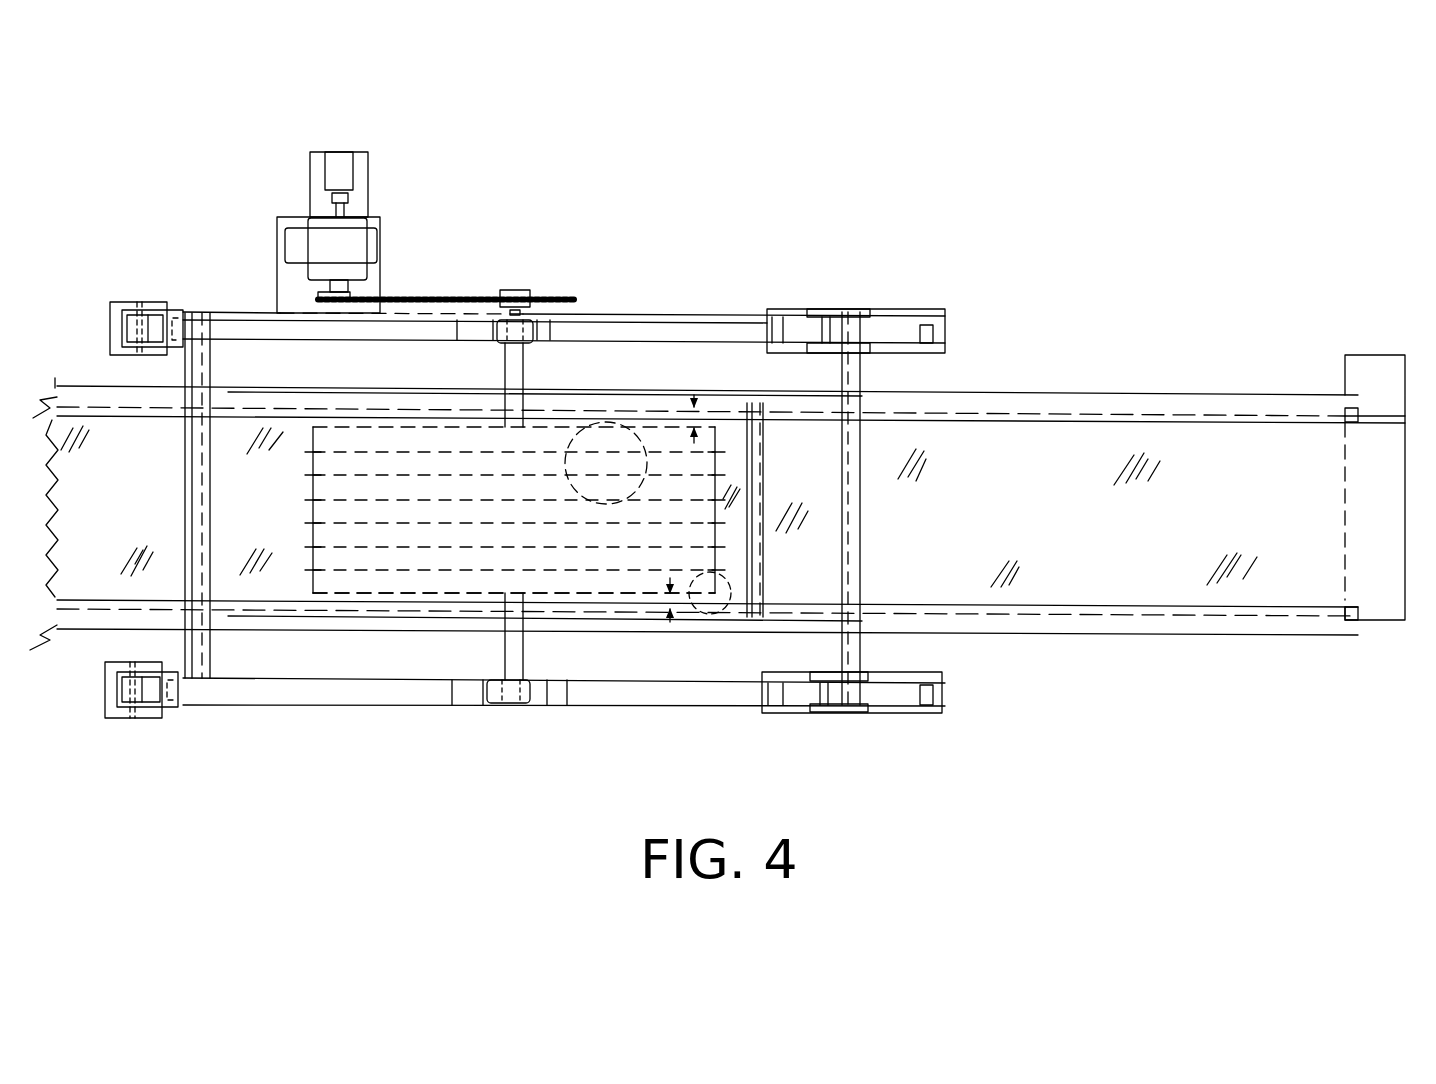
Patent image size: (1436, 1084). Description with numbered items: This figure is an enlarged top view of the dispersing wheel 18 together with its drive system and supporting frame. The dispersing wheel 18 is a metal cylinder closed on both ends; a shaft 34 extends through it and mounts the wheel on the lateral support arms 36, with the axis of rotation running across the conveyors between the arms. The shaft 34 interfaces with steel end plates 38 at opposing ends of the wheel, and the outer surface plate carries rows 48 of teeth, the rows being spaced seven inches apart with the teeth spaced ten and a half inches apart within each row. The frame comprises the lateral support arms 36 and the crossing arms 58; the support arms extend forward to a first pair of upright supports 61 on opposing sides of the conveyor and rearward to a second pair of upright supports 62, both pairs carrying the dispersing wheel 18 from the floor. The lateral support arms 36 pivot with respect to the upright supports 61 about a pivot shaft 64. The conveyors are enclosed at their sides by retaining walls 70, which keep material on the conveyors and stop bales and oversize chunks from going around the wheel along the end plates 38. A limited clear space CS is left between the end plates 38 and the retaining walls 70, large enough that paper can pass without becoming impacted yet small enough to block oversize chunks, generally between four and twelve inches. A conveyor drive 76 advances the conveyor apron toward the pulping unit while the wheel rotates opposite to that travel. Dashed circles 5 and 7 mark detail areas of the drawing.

The detail area of FIG. 5 is at (643, 433).
The detail area of FIG. 7 is at (733, 575).
The dispersing wheel 18 is at (597, 575).
The shaft 34 is at (500, 655).
The lateral support arms 36 is at (642, 320).
The end plates 38 is at (635, 595).
The rows of teeth 48 is at (343, 497).
The crossing arms 58 is at (185, 485).
The first pair of upright supports 61 is at (823, 315).
The second pair of upright supports 62 is at (120, 352).
The pivot shaft 64 is at (140, 307).
The retaining walls 70 is at (1107, 420).
The conveyor drive 76 is at (1377, 355).
The clear space CS is at (694, 395).